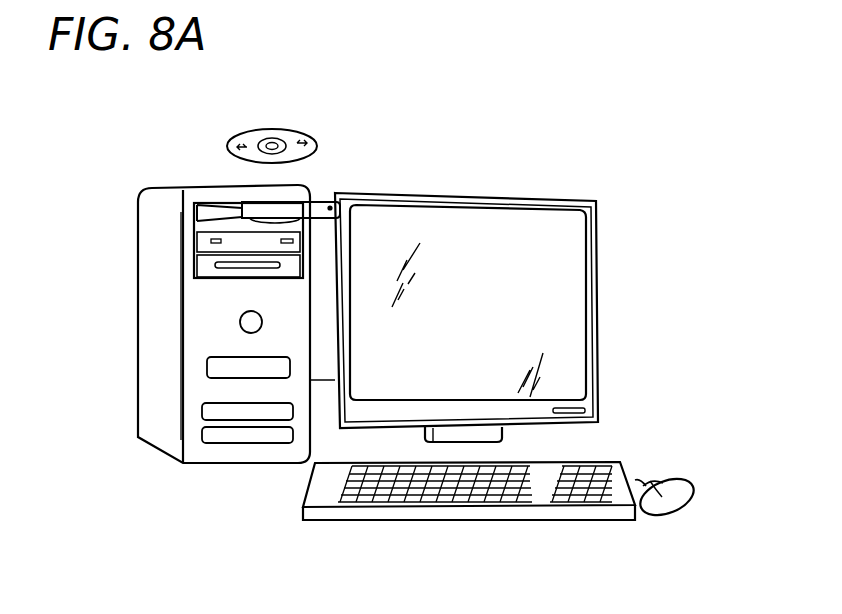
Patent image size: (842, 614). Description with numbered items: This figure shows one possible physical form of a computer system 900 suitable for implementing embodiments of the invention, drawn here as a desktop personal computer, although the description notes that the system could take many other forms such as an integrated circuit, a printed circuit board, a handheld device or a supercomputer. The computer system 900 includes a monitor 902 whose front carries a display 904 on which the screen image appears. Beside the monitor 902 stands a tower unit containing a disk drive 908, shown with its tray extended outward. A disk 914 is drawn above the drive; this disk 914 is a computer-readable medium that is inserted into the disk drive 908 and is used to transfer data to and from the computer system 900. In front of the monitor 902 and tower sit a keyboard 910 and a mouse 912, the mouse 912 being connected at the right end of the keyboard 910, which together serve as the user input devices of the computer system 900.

The computer system 900 is at (647, 157).
The monitor 902 is at (598, 285).
The display 904 is at (490, 226).
The disk drive 908 is at (253, 208).
The keyboard 910 is at (478, 506).
The mouse 912 is at (690, 492).
The disk 914 is at (268, 130).